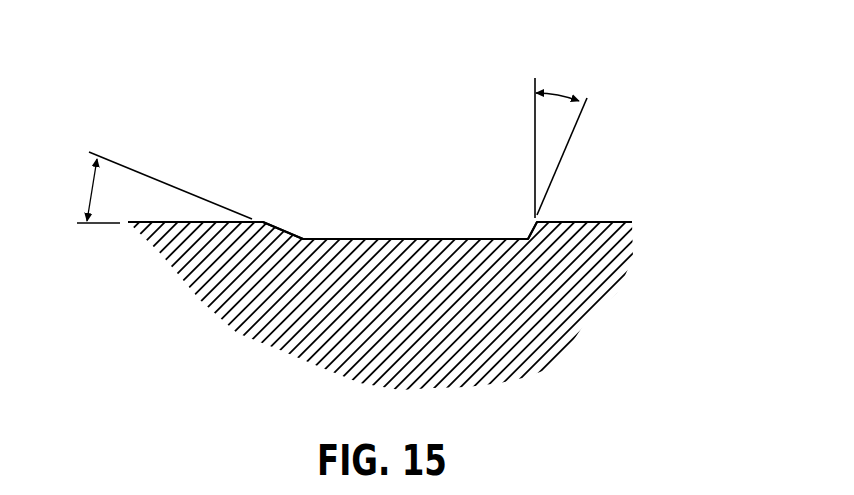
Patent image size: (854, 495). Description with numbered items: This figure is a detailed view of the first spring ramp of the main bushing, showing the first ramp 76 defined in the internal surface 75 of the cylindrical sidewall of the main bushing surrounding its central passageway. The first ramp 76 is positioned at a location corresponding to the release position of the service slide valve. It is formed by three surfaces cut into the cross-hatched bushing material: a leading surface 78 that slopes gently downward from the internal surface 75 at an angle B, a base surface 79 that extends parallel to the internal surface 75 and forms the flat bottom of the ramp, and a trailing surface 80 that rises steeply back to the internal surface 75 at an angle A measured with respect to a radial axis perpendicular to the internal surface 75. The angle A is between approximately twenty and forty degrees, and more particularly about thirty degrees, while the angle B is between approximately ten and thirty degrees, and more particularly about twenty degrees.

The internal surface 75 is at (415, 224).
The first ramp 76 is at (380, 143).
The leading surface 78 is at (290, 235).
The base surface 79 is at (392, 239).
The trailing surface 80 is at (530, 234).
The angle A is at (561, 93).
The angle B is at (90, 190).